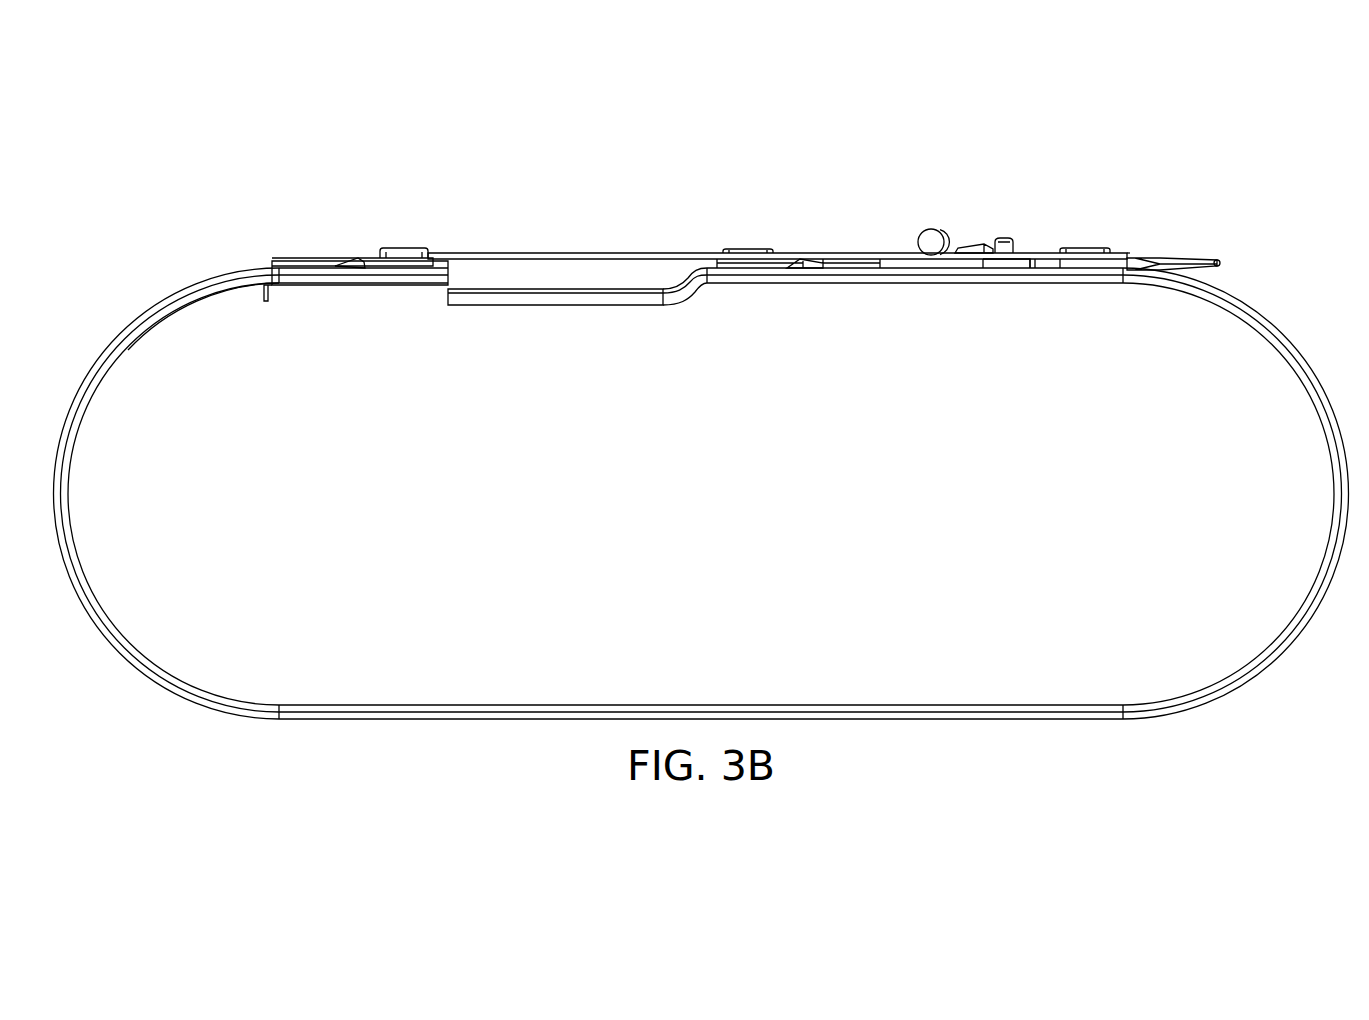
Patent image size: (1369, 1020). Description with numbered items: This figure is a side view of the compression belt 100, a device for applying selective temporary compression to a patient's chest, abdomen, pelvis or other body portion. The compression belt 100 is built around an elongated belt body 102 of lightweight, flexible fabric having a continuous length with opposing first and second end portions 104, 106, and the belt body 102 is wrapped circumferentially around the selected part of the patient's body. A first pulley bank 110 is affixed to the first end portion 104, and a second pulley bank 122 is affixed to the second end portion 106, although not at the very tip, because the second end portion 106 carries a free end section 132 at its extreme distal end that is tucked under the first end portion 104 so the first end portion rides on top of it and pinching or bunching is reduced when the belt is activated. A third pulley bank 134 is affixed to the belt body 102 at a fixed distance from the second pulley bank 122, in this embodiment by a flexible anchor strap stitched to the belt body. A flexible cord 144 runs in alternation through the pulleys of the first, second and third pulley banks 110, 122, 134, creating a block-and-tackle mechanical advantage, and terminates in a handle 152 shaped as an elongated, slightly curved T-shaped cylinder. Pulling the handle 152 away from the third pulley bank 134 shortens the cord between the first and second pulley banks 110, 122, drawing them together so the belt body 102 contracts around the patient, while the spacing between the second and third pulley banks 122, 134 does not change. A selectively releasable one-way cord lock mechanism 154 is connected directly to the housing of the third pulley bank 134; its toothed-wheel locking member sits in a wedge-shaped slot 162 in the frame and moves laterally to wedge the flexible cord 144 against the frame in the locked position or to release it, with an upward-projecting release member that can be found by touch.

The compression belt 100 is at (991, 128).
The belt body 102 is at (1278, 327).
The first end portion 104 is at (264, 290).
The second end portion 106 is at (658, 308).
The first pulley bank 110 is at (366, 236).
The second pulley bank 122 is at (771, 241).
The free end section 132 is at (558, 307).
The third pulley bank 134 is at (1101, 244).
The flexible cord 144 is at (578, 251).
The handle 152 is at (942, 228).
The cord lock mechanism 154 is at (1008, 268).
The wedge-shaped slot 162 is at (1005, 237).